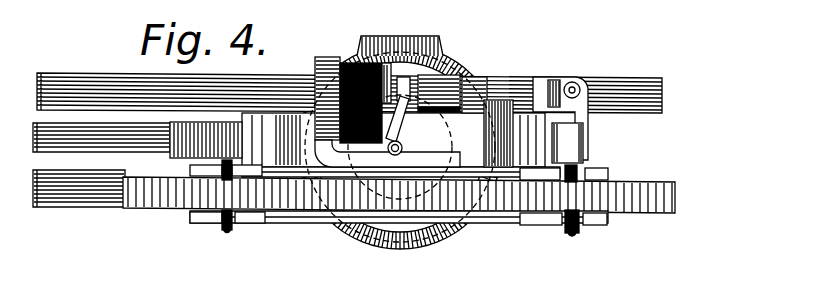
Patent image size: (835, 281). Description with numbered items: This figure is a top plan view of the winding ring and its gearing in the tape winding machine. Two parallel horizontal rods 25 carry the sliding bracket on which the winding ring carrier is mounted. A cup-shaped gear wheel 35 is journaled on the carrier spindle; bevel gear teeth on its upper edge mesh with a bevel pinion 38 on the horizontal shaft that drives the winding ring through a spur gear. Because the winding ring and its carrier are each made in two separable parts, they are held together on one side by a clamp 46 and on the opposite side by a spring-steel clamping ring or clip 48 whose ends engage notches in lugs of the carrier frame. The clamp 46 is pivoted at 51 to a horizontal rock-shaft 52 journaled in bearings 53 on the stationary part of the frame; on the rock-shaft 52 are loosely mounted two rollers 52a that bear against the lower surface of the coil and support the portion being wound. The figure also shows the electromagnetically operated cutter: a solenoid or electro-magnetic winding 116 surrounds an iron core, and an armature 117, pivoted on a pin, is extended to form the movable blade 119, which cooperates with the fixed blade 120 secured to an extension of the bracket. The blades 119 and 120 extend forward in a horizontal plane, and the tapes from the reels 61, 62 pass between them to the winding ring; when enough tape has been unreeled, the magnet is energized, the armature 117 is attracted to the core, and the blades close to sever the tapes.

The parallel horizontal rods 25 is at (54, 82).
The clamping ring or clip 48 is at (190, 155).
The tape reel 62 is at (182, 200).
The solenoid or electro-magnetic winding 116 is at (352, 57).
The armature 117 is at (401, 88).
The bevel pinion 38 is at (415, 62).
The rollers 52a is at (443, 80).
The bearings 53 is at (557, 58).
The horizontal rock-shaft 52 is at (548, 80).
The pivot 51 is at (582, 80).
The clamp 46 is at (570, 152).
The tape reel 61 is at (610, 215).
The movable blade 119 is at (357, 230).
The cup-shaped gear wheel 35 is at (387, 243).
The fixed blade 120 is at (440, 240).